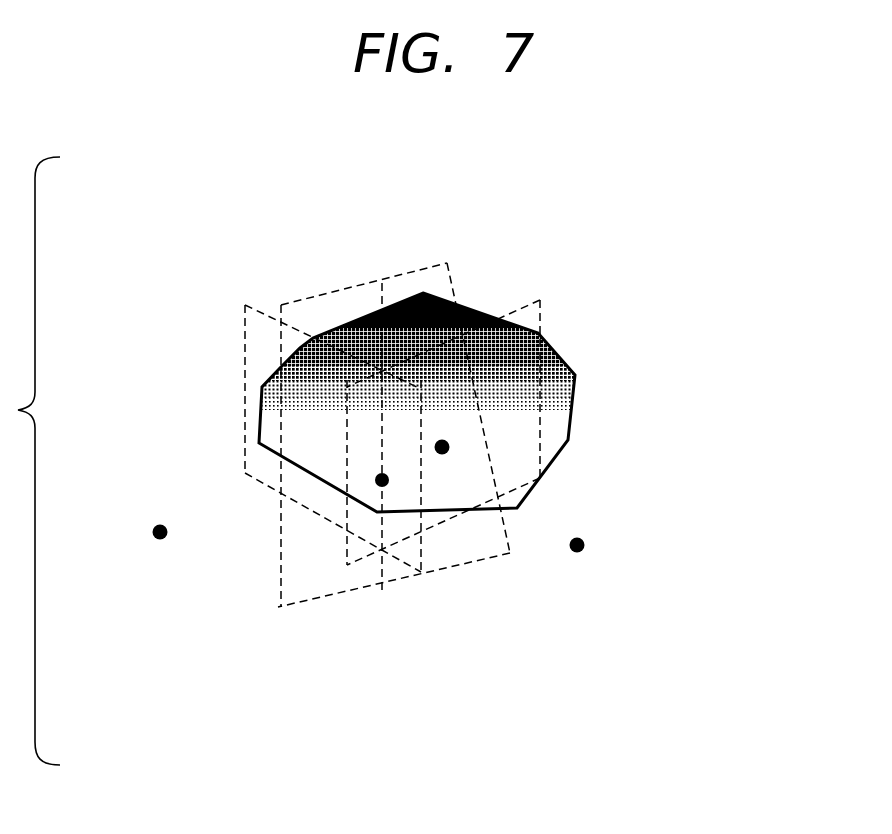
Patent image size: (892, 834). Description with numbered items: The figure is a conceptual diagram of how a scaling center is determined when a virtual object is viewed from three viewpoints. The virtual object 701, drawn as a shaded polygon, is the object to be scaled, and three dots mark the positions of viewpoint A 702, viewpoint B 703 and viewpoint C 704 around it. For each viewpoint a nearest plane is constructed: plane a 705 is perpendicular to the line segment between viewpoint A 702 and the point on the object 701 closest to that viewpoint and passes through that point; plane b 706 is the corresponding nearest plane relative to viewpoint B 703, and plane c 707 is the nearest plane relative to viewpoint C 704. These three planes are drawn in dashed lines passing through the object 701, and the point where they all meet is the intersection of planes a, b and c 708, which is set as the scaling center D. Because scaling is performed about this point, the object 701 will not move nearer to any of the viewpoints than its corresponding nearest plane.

The virtual object 701 is at (672, 453).
The viewpoint A 702 is at (113, 663).
The viewpoint B 703 is at (655, 620).
The viewpoint C 704 is at (622, 508).
The plane a 705 is at (245, 393).
The plane b 706 is at (640, 300).
The plane c 707 is at (327, 290).
The intersection of planes a, b and c 708 is at (410, 648).